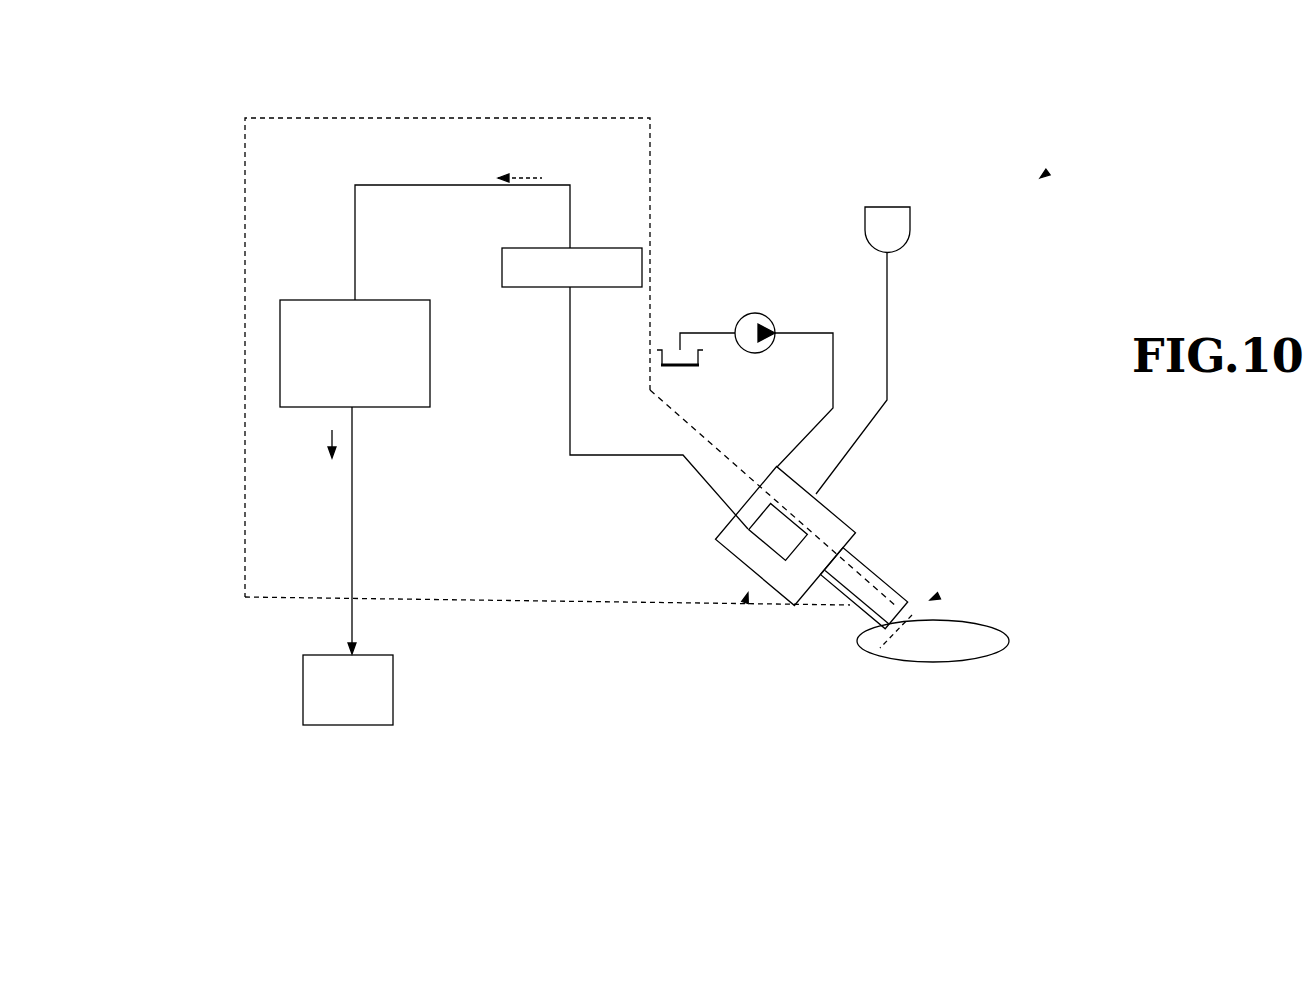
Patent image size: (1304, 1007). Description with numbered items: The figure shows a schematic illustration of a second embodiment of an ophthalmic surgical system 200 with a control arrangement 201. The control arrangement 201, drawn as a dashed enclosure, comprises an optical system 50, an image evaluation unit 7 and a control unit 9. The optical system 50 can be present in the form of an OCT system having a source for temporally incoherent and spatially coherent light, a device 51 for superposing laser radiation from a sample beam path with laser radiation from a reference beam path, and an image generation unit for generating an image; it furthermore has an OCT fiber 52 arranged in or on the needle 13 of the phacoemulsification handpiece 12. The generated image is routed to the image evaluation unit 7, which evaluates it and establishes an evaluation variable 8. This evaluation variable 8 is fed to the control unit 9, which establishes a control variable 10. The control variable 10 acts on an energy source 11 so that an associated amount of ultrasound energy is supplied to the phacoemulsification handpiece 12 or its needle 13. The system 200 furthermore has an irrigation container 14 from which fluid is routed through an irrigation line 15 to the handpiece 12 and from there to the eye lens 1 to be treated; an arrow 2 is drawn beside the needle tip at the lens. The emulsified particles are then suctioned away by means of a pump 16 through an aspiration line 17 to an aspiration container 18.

The eye lens 1 is at (960, 665).
The movement direction arrow 2 is at (932, 599).
The image evaluation unit 7 is at (616, 248).
The evaluation variable 8 is at (530, 177).
The control unit 9 is at (280, 340).
The control variable 10 is at (325, 446).
The energy source 11 is at (350, 728).
The phacoemulsification handpiece 12 is at (835, 515).
The needle 13 is at (878, 576).
The irrigation container 14 is at (910, 226).
The irrigation line 15 is at (887, 307).
The pump 16 is at (755, 313).
The aspiration line 17 is at (813, 330).
The aspiration container 18 is at (683, 368).
The optical system 50 is at (748, 594).
The device for superposing laser radiation 51 is at (770, 558).
The OCT fiber 52 is at (842, 612).
The ophthalmic surgical system 200 is at (1041, 177).
The control arrangement 201 is at (247, 161).